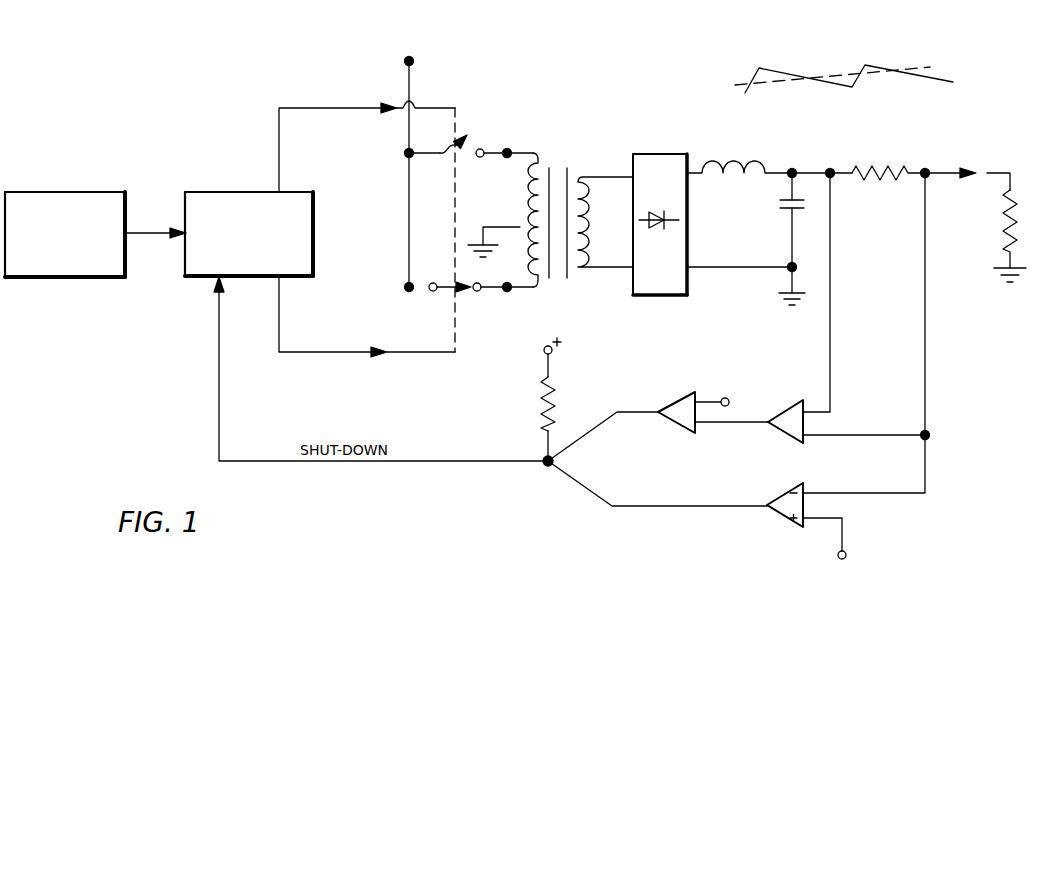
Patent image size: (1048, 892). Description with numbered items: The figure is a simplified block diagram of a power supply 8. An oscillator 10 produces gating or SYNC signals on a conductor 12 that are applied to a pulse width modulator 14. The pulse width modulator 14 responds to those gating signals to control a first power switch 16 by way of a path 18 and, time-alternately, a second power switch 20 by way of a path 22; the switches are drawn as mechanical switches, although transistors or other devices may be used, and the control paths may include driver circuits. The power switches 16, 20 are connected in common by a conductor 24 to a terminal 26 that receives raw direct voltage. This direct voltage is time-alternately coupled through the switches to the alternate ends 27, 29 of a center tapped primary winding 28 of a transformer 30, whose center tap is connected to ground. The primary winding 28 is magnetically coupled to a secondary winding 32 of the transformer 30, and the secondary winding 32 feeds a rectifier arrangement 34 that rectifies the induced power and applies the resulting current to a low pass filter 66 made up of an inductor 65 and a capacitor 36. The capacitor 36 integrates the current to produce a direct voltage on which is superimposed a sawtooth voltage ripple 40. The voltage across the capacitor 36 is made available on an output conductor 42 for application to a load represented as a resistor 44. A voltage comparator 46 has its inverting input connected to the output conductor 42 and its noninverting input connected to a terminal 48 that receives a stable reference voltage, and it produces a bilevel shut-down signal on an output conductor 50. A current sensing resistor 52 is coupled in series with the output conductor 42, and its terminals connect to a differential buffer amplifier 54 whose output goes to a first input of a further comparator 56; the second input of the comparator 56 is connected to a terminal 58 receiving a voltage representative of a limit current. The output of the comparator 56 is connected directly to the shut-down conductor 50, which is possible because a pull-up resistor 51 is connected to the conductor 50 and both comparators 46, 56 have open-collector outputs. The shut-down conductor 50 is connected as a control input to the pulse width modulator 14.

The power supply 8 is at (443, 514).
The oscillator 10 is at (90, 278).
The conductor 12 is at (148, 236).
The pulse width modulator 14 is at (237, 190).
The first power switch 16 is at (441, 159).
The path 18 is at (395, 113).
The power switch 20 is at (433, 292).
The path 22 is at (400, 353).
The conductor 24 is at (410, 90).
The terminal 26 is at (414, 60).
The end of primary winding 27 is at (508, 150).
The center tapped primary winding 28 is at (520, 192).
The end of primary winding 29 is at (507, 291).
The transformer 30 is at (575, 144).
The secondary winding 32 is at (600, 218).
The rectifier arrangement 34 is at (660, 152).
The capacitor 36 is at (788, 214).
The sawtooth voltage ripple 40 is at (800, 78).
The output conductor 42 is at (941, 166).
The resistor 44 is at (1017, 218).
The voltage comparator 46 is at (784, 494).
The terminal 48 is at (838, 556).
The output conductor 50 is at (664, 508).
The pull-up resistor 51 is at (542, 394).
The resistor 52 is at (870, 168).
The differential buffer amplifier 54 is at (776, 428).
The comparator 56 is at (660, 426).
The terminal 58 is at (730, 402).
The inductor 65 is at (742, 176).
The low pass filter 66 is at (832, 93).